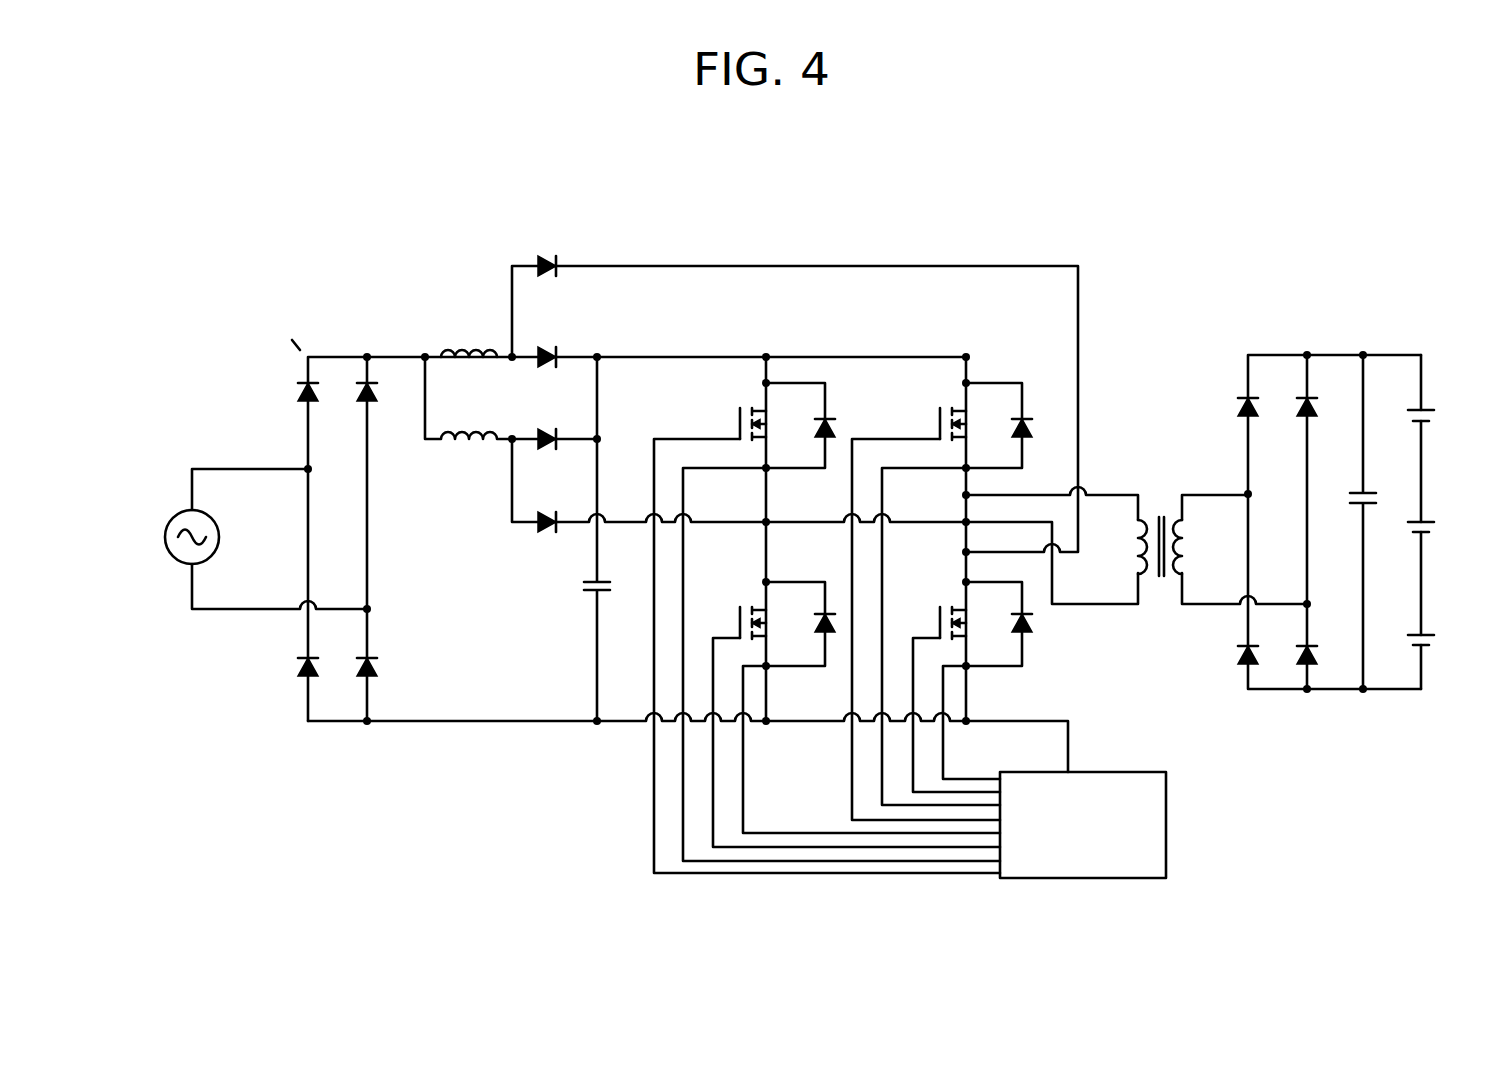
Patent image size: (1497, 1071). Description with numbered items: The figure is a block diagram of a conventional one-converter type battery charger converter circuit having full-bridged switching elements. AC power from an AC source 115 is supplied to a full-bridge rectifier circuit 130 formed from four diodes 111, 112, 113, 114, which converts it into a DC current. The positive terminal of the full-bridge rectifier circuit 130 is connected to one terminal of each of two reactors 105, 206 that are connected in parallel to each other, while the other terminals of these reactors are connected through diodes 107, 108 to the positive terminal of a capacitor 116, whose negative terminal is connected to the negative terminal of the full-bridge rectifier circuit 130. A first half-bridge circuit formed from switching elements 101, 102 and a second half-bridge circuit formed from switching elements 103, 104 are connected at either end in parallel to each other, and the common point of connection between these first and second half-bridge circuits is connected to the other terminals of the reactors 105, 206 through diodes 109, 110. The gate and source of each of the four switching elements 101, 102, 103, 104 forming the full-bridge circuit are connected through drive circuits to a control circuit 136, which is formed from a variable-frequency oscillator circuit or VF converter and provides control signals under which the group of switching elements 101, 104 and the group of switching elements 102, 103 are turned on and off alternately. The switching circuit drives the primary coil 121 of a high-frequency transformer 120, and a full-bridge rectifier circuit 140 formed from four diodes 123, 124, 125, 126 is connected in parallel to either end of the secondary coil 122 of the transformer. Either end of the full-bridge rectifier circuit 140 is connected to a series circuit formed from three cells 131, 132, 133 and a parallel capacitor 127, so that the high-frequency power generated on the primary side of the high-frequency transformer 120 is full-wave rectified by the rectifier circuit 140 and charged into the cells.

The switching element 101 is at (745, 400).
The switching element 102 is at (750, 594).
The switching element 103 is at (922, 400).
The switching element 104 is at (945, 594).
The reactor 105 is at (450, 336).
The reactor 206 is at (467, 453).
The diode 107 is at (578, 350).
The diode 108 is at (568, 432).
The diode 109 is at (535, 530).
The diode 110 is at (570, 247).
The diode 111 is at (288, 390).
The diode 112 is at (295, 710).
The diode 113 is at (353, 402).
The diode 114 is at (383, 665).
The AC source 115 is at (182, 572).
The capacitor 116 is at (567, 612).
The high-frequency transformer 120 is at (1136, 511).
The primary coil 121 is at (1132, 548).
The secondary coil 122 is at (1198, 543).
The diode 123 is at (1240, 405).
The diode 124 is at (1232, 665).
The diode 125 is at (1282, 410).
The diode 126 is at (1287, 643).
The capacitor 127 is at (1358, 508).
The full-bridge rectifier circuit 130 is at (339, 573).
The cell 131 is at (1425, 408).
The cell 132 is at (1425, 518).
The cell 133 is at (1426, 636).
The control circuit 136 is at (1166, 830).
The full-bridge rectifier circuit 140 is at (1304, 565).